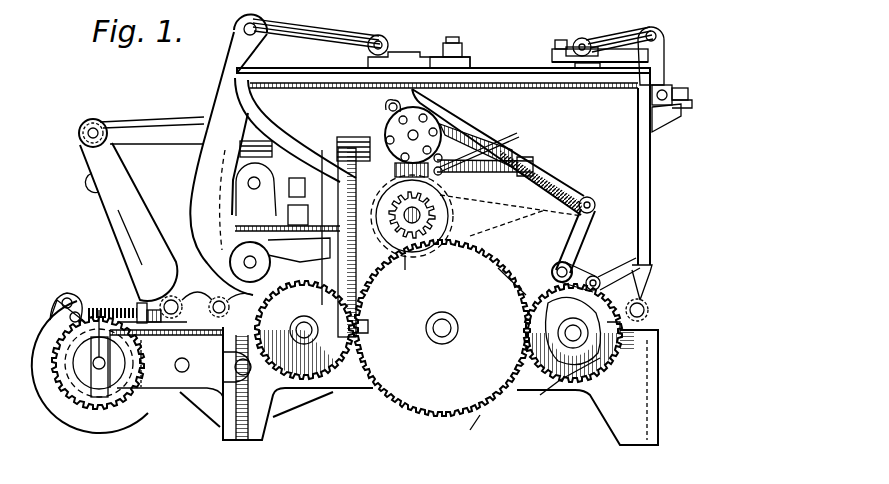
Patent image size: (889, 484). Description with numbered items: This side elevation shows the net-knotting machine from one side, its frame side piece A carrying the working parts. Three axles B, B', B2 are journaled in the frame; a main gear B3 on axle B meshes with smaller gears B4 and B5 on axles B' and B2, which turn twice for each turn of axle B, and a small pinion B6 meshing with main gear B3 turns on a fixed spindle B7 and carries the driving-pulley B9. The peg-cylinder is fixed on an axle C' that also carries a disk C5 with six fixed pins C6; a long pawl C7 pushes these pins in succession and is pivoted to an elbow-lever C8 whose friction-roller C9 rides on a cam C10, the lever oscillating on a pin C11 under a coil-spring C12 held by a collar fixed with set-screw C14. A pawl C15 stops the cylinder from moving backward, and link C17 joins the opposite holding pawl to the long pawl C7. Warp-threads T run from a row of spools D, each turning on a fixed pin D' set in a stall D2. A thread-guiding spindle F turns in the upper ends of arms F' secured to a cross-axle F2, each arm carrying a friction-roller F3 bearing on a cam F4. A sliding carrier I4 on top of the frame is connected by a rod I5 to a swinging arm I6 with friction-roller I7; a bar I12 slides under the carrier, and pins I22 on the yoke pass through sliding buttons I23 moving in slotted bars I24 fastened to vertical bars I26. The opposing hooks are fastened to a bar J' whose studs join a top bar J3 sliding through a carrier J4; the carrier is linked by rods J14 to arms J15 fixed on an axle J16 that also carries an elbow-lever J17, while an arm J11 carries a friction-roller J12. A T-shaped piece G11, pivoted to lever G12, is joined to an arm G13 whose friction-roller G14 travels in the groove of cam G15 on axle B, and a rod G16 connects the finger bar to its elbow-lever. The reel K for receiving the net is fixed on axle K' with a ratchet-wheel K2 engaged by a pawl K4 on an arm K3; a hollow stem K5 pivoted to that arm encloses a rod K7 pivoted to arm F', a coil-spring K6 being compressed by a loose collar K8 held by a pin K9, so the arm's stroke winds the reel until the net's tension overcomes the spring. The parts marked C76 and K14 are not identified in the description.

The main side piece A is at (645, 187).
The arms J15 is at (232, 75).
The rods J14 is at (330, 32).
The carrier J4 is at (412, 63).
The top bar J3 is at (462, 49).
The bar J' is at (460, 63).
The carrier I4 is at (552, 58).
The bar I12 is at (586, 70).
The rod I5 is at (618, 40).
The swinging arm I6 is at (654, 50).
The pin I22 is at (666, 90).
The bars I24 is at (688, 94).
The vertical bars I26 is at (692, 105).
The sliding buttons I23 is at (674, 112).
The friction-roller I7 is at (645, 308).
The warp-threads T is at (178, 127).
The thread-guiding spindle F is at (113, 210).
The arms F' is at (138, 230).
The spools D is at (221, 212).
The stall D2 is at (228, 205).
The fixed pin D' is at (256, 189).
The elbow-lever J17 is at (278, 227).
The axle J16 is at (231, 262).
The lever G12 is at (296, 204).
The friction-roller J12 is at (345, 195).
The rod G16 is at (315, 130).
The arm J11 is at (352, 137).
The T-shaped piece G11 is at (400, 163).
The arm G13 is at (337, 302).
The friction-roller G14 is at (390, 312).
The axle C' is at (401, 135).
The pawl C15 is at (385, 120).
The disk C5 is at (422, 95).
The fixed pins C6 is at (458, 130).
The rod C76 is at (484, 142).
The link C17 is at (460, 176).
The long pawl C7 is at (556, 186).
The elbow-lever C8 is at (566, 236).
The pin C11 is at (551, 272).
The coil-spring C12 is at (582, 252).
The friction-roller C9 is at (598, 276).
The small pinion B6 is at (437, 216).
The driving-pulley B9 is at (452, 233).
The fixed spindle B7 is at (405, 270).
The main gear B3 is at (503, 277).
The axle B is at (446, 328).
The set-screw C14 is at (527, 294).
The axle B2 is at (303, 342).
The smaller gear B5 is at (330, 396).
The axle B' is at (573, 333).
The cam C10 is at (606, 362).
The smaller gear B4 is at (558, 380).
The cam G15 is at (478, 418).
The reel K is at (80, 369).
The axle K' is at (69, 353).
The ratchet-wheel K2 is at (78, 410).
The bar K14 is at (160, 395).
The cross-axle F2 is at (235, 367).
The arm K3 is at (92, 285).
The pawl K4 is at (50, 310).
The hollow stem K5 is at (115, 305).
The coil-spring K6 is at (142, 302).
The rod K7 is at (160, 286).
The loose collar K8 is at (178, 296).
The pin K9 is at (232, 284).
The friction-roller F3 is at (212, 305).
The cam F4 is at (245, 300).